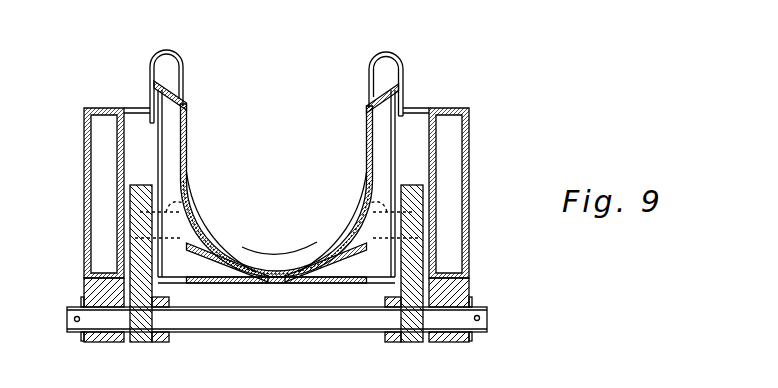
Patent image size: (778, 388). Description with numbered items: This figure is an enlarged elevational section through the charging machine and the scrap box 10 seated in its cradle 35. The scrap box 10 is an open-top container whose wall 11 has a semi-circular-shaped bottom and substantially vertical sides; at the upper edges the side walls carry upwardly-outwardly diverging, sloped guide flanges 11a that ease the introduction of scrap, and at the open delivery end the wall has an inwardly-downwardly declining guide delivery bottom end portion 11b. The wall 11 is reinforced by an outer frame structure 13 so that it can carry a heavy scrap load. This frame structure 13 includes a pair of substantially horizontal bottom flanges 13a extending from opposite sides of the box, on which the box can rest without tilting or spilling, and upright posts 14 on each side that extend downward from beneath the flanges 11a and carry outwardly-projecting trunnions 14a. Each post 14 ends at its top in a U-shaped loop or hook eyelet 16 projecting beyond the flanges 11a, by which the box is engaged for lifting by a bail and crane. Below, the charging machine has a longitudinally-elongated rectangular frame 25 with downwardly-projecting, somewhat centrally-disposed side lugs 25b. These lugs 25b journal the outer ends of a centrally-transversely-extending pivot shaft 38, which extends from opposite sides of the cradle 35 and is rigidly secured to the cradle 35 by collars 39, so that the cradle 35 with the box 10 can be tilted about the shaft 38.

The scrap box 10 is at (283, 246).
The wall 11 is at (195, 246).
The guide flanges 11a is at (168, 90).
The guide delivery bottom end portion 11b is at (322, 243).
The outer frame structure 13 is at (197, 251).
The bottom flanges 13a is at (213, 283).
The upright posts 14 is at (380, 136).
The trunnions 14a is at (197, 190).
The hook eyelet 16 is at (173, 52).
The frame 25 is at (87, 262).
The side lugs 25b is at (108, 345).
The cradle 35 is at (141, 185).
The pivot shaft 38 is at (488, 316).
The collars 39 is at (166, 345).